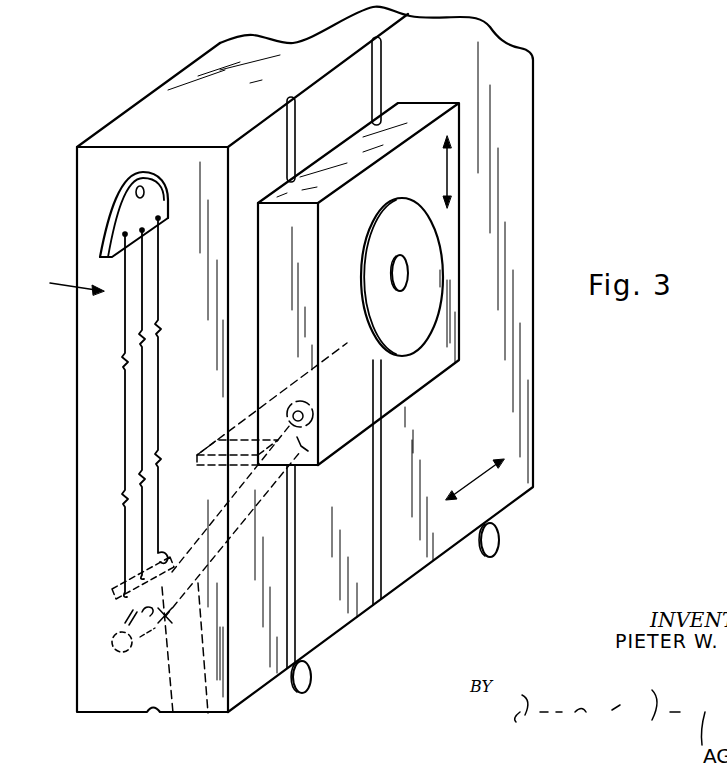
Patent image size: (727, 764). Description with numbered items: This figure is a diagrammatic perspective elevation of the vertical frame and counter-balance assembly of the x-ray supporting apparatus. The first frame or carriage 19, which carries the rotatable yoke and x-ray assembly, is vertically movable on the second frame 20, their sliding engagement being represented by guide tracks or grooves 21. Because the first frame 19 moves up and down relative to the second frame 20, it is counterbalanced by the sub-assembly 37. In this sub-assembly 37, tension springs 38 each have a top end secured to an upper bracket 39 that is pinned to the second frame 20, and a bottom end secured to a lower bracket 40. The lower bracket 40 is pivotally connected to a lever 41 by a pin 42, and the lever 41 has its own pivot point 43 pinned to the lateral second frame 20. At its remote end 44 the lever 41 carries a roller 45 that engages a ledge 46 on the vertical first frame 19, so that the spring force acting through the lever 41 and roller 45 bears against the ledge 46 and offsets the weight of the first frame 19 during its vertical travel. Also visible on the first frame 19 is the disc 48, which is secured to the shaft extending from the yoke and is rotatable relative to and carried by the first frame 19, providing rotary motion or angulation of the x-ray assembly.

The first frame 19 is at (457, 123).
The second frame 20 is at (493, 40).
The guide tracks 21 is at (378, 586).
The sub-assembly 37 is at (62, 283).
The tension springs 38 is at (157, 308).
The upper bracket 39 is at (112, 231).
The lower bracket 40 is at (112, 602).
The lever 41 is at (213, 665).
The pin 42 is at (178, 667).
The pivot point 43 is at (110, 643).
The remote end 44 is at (300, 450).
The roller 45 is at (314, 412).
The ledge 46 is at (218, 442).
The disc 48 is at (413, 239).